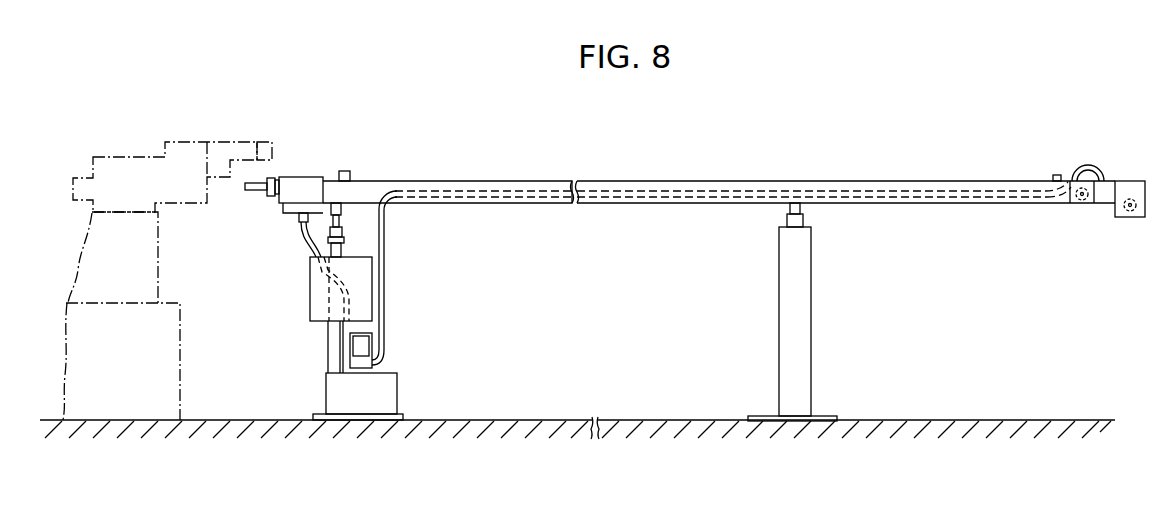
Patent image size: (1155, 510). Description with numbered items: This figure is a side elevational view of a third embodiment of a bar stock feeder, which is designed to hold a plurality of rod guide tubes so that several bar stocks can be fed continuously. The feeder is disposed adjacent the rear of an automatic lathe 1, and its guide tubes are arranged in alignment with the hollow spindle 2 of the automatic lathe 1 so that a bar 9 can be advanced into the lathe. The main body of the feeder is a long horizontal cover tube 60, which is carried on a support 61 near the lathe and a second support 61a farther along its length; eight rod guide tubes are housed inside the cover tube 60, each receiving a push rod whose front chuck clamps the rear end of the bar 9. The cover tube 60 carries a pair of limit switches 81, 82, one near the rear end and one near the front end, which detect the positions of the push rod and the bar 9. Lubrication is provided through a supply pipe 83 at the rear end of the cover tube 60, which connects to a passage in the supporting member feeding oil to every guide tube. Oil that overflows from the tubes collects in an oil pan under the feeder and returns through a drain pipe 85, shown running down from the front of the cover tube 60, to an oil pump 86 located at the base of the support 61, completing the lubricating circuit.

The automatic lathe 1 is at (182, 366).
The hollow spindle 2 is at (73, 178).
The bar 9 is at (252, 190).
The cover tube 60 is at (629, 181).
The support 61 is at (328, 352).
The support 61a is at (800, 333).
The limit switch 81 is at (1053, 175).
The limit switch 82 is at (347, 171).
The supply pipe 83 is at (1092, 168).
The drain pipe 85 is at (303, 238).
The oil pump 86 is at (400, 397).